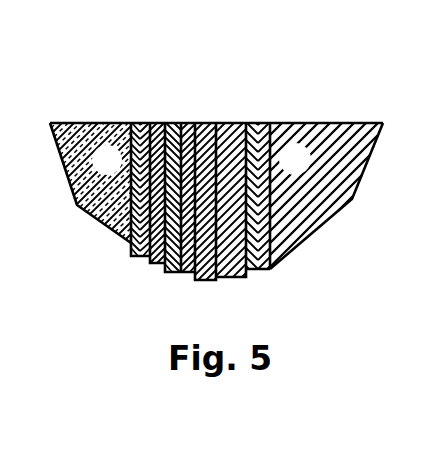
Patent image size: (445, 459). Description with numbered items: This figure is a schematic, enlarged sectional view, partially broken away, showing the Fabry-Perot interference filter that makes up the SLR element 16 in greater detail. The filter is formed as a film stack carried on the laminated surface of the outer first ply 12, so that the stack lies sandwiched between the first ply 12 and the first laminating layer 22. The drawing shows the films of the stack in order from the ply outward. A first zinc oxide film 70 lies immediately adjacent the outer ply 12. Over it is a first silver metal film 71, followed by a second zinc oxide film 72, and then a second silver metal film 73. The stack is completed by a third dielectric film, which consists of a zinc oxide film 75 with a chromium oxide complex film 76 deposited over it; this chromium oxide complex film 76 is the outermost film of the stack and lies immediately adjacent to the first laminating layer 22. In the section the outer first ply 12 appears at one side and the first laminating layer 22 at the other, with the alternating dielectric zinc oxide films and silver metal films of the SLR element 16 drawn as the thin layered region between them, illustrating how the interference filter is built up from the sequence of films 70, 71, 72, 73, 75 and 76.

The outer first ply 12 is at (118, 172).
The first laminating layer 22 is at (308, 171).
The SLR element 16 is at (270, 58).
The first zinc oxide film 70 is at (139, 122).
The first silver metal film 71 is at (157, 122).
The second zinc oxide film 72 is at (183, 122).
The second silver metal film 73 is at (210, 122).
The zinc oxide film 75 is at (233, 122).
The chromium oxide complex film 76 is at (259, 122).